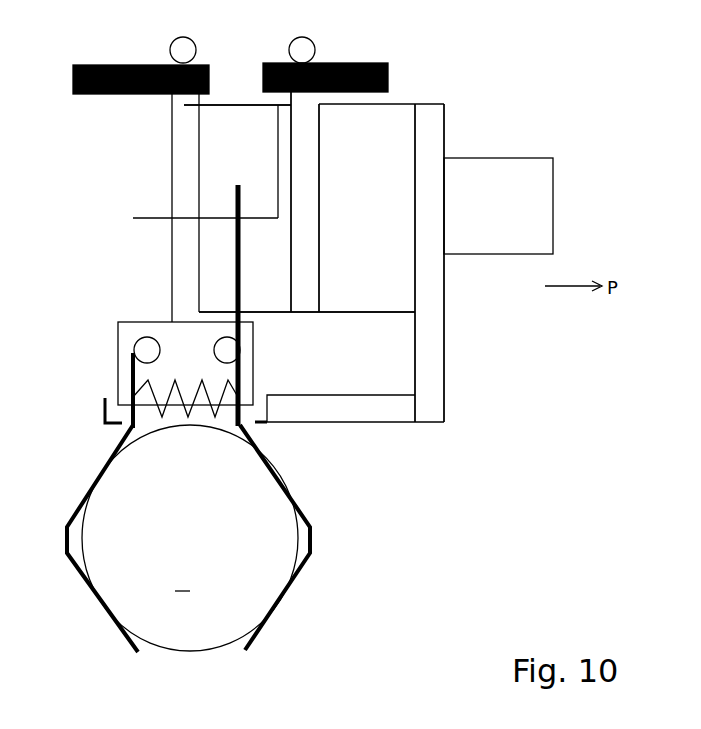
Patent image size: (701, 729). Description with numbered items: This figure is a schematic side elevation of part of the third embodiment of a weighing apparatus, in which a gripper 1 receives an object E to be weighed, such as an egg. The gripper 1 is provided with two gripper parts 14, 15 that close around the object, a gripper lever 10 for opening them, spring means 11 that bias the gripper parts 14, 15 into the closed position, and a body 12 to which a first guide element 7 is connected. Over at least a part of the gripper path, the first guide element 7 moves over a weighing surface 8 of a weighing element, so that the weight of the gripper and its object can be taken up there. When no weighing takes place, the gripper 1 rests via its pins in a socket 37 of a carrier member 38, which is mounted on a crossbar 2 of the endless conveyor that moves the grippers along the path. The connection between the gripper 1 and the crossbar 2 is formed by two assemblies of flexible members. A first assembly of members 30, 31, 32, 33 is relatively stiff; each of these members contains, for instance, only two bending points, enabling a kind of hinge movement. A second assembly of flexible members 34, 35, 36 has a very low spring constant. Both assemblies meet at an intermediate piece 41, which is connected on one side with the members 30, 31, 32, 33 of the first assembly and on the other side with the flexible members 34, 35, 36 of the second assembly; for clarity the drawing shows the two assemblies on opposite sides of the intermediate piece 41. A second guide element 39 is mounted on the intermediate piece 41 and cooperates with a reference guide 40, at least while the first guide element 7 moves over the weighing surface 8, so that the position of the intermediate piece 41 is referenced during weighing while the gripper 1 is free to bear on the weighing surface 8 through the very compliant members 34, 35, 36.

The gripper 1 is at (60, 454).
The crossbar 2 is at (555, 215).
The first guide element 7 is at (196, 45).
The weighing surface 8 is at (110, 65).
The gripper lever 10 is at (242, 237).
The spring means 11 is at (188, 383).
The body 12 is at (188, 199).
The gripper part 14 is at (312, 548).
The gripper part 15 is at (70, 563).
The member of first assembly 30 is at (321, 346).
The member of first assembly 31 is at (347, 312).
The member of first assembly 32 is at (397, 242).
The member of first assembly 33 is at (392, 102).
The flexible member of second assembly 34 is at (226, 107).
The flexible member of second assembly 35 is at (216, 338).
The flexible member of second assembly 36 is at (258, 310).
The socket 37 is at (259, 389).
The carrier member 38 is at (428, 369).
The second guide element 39 is at (313, 44).
The reference guide 40 is at (363, 62).
The intermediate piece 41 is at (307, 220).